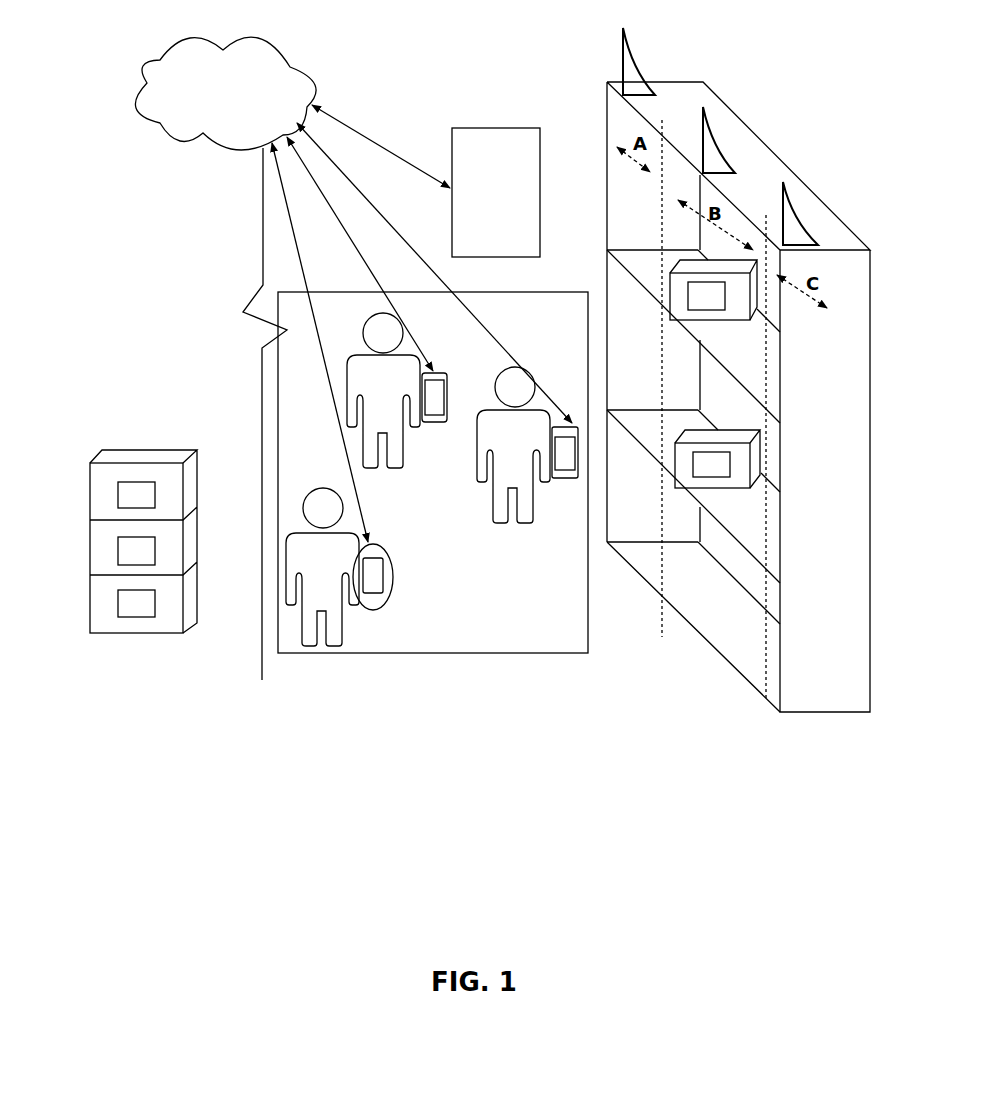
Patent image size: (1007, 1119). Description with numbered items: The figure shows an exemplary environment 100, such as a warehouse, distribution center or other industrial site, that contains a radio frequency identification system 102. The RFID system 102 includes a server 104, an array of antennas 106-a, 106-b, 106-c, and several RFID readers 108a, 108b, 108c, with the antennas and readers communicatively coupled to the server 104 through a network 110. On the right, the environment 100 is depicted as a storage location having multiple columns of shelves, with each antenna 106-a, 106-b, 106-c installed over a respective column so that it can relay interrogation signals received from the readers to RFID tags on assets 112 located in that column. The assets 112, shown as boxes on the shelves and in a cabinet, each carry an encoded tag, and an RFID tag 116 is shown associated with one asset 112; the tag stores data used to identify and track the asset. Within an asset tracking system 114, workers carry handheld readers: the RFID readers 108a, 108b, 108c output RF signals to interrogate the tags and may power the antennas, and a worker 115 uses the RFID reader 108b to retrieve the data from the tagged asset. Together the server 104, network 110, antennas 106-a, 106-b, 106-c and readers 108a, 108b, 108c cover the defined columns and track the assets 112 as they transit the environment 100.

The environment 100 is at (115, 64).
The radio frequency identification (RFID) system 102 is at (475, 75).
The server 104 is at (510, 225).
The antenna 106-a is at (643, 68).
The antenna 106-b is at (718, 137).
The antenna 106-c is at (800, 205).
The RFID reader 108a is at (437, 425).
The RFID reader 108b is at (393, 568).
The RFID reader 108c is at (577, 483).
The network 110 is at (236, 119).
The asset 112 is at (687, 297).
The asset tracking system 114 is at (500, 655).
The worker 115 is at (333, 637).
The RFID tag 116 is at (117, 497).